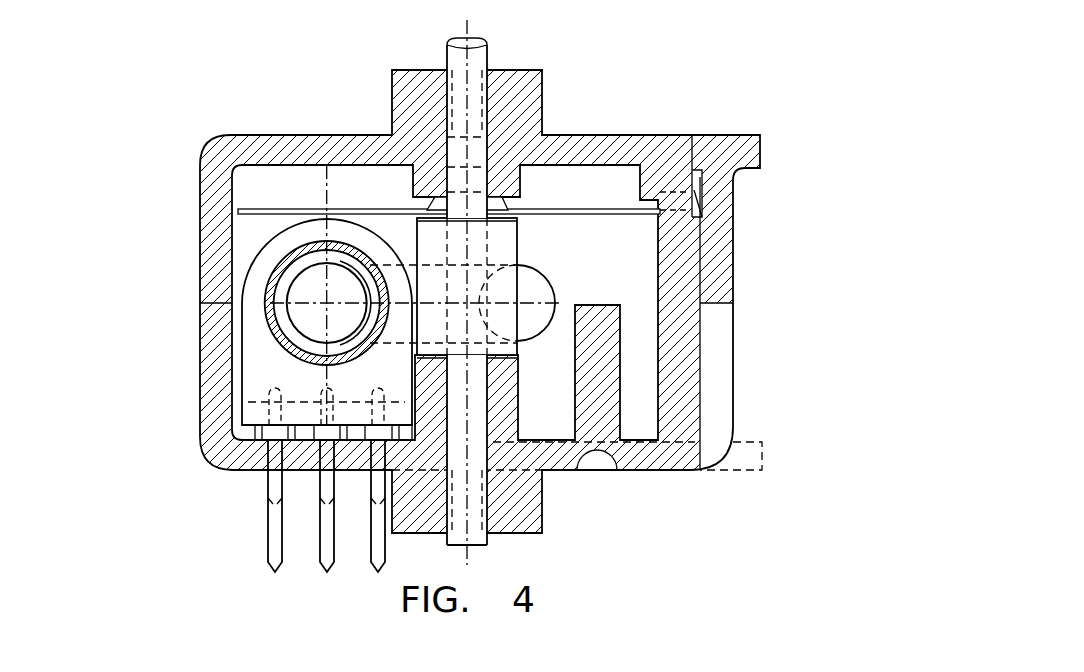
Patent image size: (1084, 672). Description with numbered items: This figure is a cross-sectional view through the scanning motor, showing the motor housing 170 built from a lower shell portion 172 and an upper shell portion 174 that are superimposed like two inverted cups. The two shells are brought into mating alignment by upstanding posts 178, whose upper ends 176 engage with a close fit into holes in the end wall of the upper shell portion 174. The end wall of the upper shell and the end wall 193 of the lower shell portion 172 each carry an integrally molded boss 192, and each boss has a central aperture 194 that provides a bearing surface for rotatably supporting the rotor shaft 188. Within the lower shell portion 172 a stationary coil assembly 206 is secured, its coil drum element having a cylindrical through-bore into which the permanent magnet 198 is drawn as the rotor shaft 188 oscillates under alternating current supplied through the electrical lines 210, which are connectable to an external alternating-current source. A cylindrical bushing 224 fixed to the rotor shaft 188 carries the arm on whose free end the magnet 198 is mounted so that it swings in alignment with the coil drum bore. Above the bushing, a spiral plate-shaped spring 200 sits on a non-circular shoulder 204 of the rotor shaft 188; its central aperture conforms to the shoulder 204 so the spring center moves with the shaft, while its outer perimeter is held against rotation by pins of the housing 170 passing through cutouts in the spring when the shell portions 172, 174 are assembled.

The motor housing 170 is at (172, 259).
The lower shell portion 172 is at (705, 397).
The upper shell portion 174 is at (700, 255).
The post upper ends 176 is at (695, 192).
The upstanding posts 178 is at (682, 343).
The rotor shaft 188 is at (488, 53).
The bosses 192 is at (542, 112).
The end wall of lower shell portion 193 is at (673, 457).
The central apertures 194 is at (447, 98).
The permanent magnet 198 is at (282, 275).
The spiral plate-shaped spring 200 is at (263, 208).
The shoulder 204 is at (528, 207).
The stationary coil assembly 206 is at (280, 338).
The electrical lines 210 is at (270, 543).
The cylindrical bushing 224 is at (518, 250).